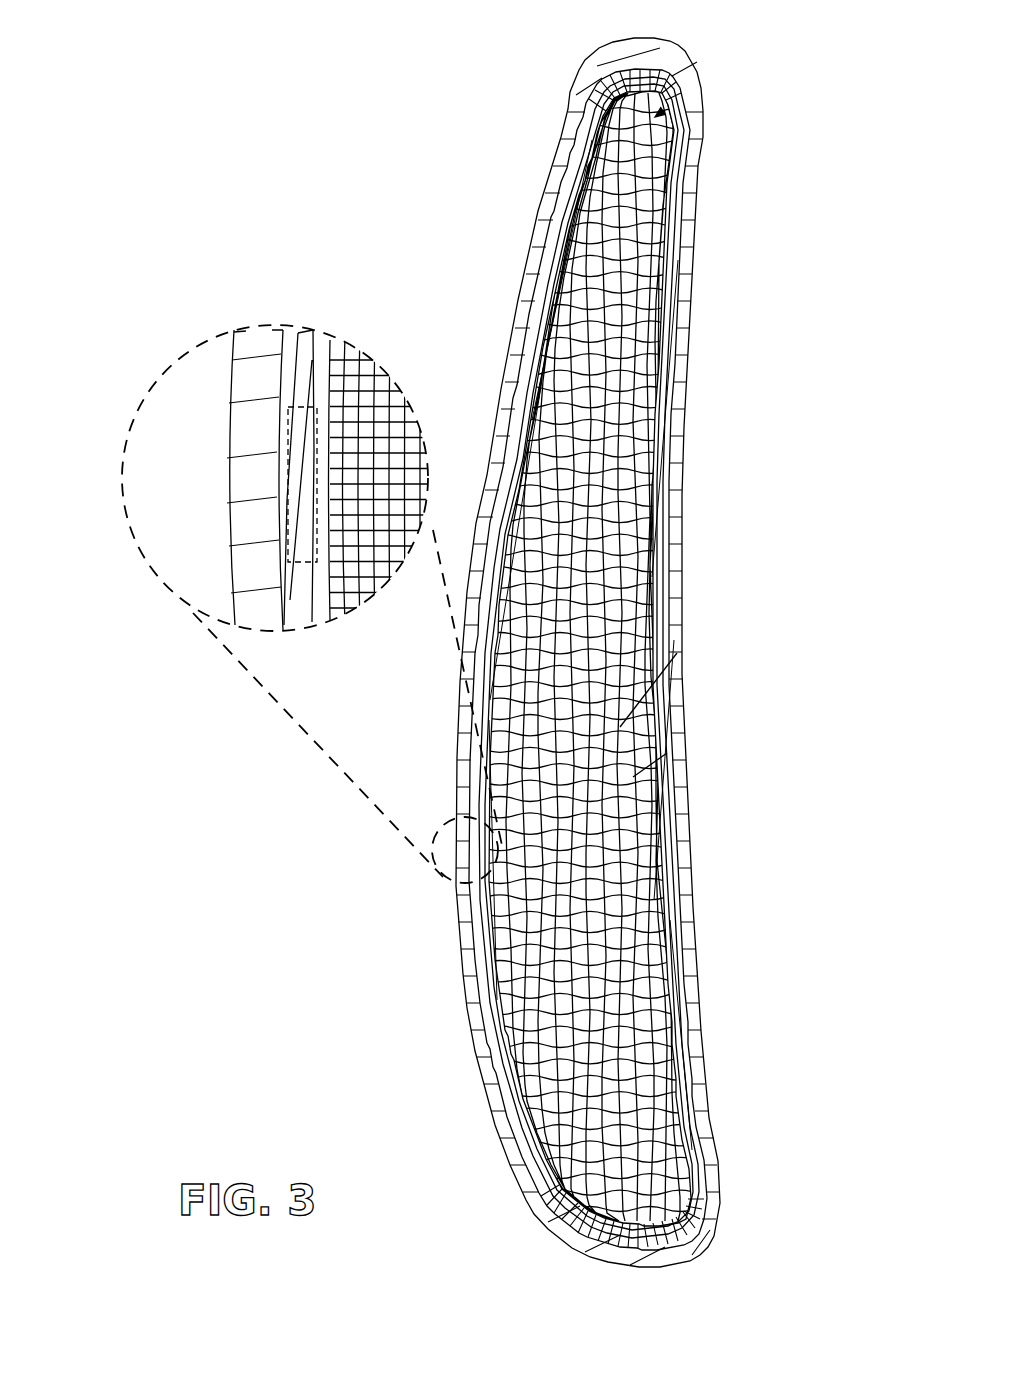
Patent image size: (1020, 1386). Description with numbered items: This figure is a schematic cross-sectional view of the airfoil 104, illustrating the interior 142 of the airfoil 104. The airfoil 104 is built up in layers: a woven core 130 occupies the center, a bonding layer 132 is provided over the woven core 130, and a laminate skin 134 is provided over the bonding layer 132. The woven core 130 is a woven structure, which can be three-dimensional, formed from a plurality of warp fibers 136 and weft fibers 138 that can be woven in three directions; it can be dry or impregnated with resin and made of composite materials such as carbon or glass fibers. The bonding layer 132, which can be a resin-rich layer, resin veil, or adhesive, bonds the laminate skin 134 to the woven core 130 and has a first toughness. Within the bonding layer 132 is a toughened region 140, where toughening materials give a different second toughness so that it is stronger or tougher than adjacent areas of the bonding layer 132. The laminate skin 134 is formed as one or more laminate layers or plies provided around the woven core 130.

The airfoil 104 is at (467, 147).
The woven core 130 is at (645, 327).
The bonding layer 132 is at (658, 505).
The laminate skin 134 is at (675, 427).
The warp fibers 136 is at (677, 653).
The weft fibers 138 is at (667, 753).
The toughened region 140 is at (287, 532).
The interior 142 is at (658, 114).